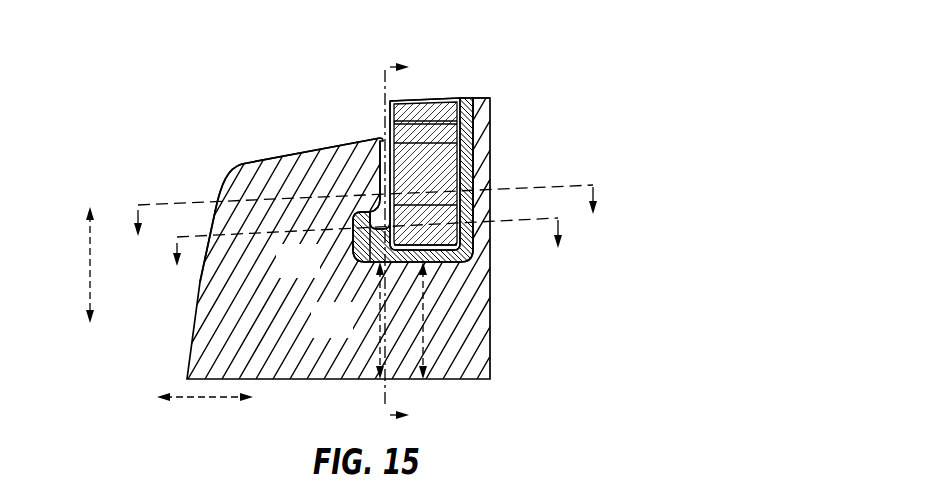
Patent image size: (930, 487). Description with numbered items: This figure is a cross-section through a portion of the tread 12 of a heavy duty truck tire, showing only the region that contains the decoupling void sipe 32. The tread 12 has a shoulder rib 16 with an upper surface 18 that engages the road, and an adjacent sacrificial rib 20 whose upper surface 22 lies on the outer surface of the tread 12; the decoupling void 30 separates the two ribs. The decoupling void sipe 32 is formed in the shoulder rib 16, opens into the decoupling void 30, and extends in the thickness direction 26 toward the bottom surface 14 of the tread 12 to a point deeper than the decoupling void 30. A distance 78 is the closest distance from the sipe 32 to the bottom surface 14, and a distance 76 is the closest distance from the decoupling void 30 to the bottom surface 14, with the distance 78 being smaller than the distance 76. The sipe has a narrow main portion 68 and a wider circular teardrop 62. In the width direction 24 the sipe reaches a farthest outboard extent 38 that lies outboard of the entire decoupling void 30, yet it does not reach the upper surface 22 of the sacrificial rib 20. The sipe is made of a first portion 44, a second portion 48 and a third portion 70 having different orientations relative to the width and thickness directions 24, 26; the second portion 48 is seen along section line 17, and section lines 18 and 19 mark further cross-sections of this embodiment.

The tread 12 is at (620, 46).
The bottom surface 14 is at (478, 390).
The shoulder rib 16 is at (488, 143).
The section line 17- 17 is at (368, 227).
The upper surface 18 is at (513, 55).
The section line 19- 19 is at (414, 242).
The sacrificial rib 20 is at (238, 173).
The upper surface 22 is at (300, 130).
The width direction 24 is at (192, 398).
The thickness direction 26 is at (90, 273).
The decoupling void 30 is at (384, 190).
The decoupling void sipe 32 is at (442, 100).
The farthest outboard extent 38 is at (360, 232).
The first portion 44 is at (458, 108).
The second portion 48 is at (470, 207).
The teardrop 62 is at (460, 268).
The main portion 68 is at (470, 165).
The third portion 70 is at (470, 248).
The distance 76 is at (380, 310).
The distance 78 is at (423, 323).